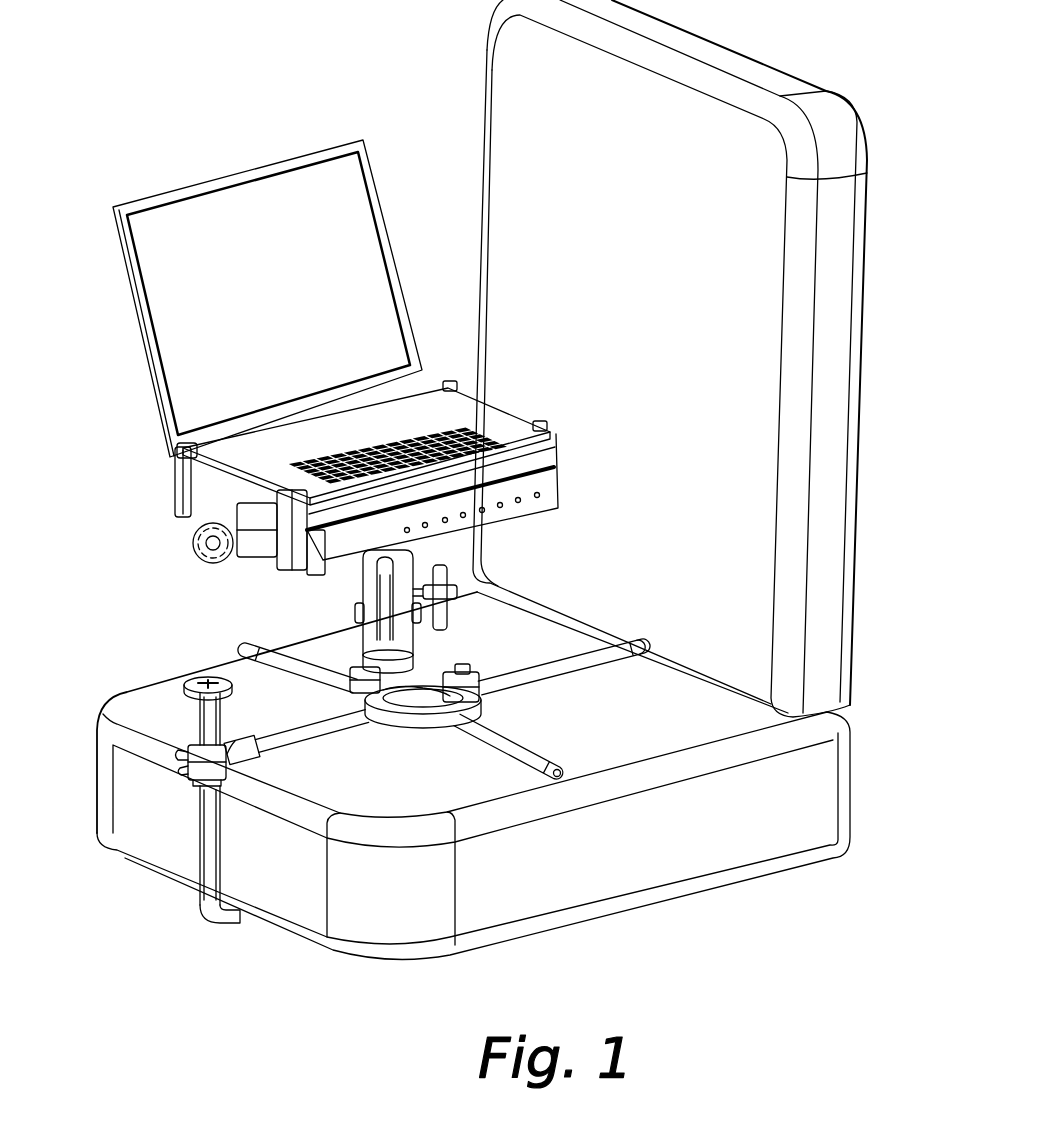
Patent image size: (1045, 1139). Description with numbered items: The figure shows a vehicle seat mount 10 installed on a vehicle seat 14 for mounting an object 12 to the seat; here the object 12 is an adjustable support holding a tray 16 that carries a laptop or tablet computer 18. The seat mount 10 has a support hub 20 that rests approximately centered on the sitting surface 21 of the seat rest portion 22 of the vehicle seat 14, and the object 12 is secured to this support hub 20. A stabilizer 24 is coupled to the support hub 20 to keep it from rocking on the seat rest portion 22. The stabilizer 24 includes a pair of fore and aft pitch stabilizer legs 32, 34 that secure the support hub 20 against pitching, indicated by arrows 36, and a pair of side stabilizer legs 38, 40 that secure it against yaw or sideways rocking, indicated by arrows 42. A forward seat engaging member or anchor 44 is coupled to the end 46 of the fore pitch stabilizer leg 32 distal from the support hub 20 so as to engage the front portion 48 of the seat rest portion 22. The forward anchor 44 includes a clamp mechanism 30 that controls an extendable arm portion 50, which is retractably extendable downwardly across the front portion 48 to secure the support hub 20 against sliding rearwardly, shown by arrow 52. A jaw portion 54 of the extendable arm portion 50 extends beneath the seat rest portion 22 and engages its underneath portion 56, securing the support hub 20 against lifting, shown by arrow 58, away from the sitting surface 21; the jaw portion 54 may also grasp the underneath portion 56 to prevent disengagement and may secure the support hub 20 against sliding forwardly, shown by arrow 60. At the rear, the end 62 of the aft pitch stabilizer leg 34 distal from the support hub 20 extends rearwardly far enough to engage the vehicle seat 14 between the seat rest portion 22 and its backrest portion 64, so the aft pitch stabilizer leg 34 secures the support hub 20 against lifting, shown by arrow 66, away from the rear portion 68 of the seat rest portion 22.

The vehicle seat mount 10 is at (127, 657).
The object 12 is at (360, 607).
The vehicle seat 14 is at (482, 140).
The tray 16 is at (548, 497).
The laptop or tablet computer 18 is at (502, 424).
The support hub 20 is at (420, 713).
The sitting surface 21 is at (468, 774).
The seat rest portion 22 is at (617, 877).
The stabilizer 24 is at (493, 747).
The clamp mechanism 30 is at (197, 743).
The fore pitch stabilizer leg 32 is at (303, 737).
The aft pitch stabilizer leg 34 is at (527, 673).
The pitching arrows 36 is at (167, 722).
The side stabilizer leg 38 is at (322, 680).
The side stabilizer leg 40 is at (507, 746).
The yaw arrows 42 is at (258, 609).
The forward seat engaging member or anchor 44 is at (213, 837).
The end of fore pitch stabilizer leg 46 is at (268, 739).
The front portion of seat rest 48 is at (313, 912).
The extendable arm portion 50 is at (213, 870).
The rearward sliding arrow 52 is at (348, 773).
The jaw portion 54 is at (223, 913).
The underneath portion of seat rest 56 is at (270, 922).
The lifting arrow 58 is at (220, 963).
The forward sliding arrow 60 is at (595, 678).
The end of aft pitch stabilizer leg 62 is at (619, 650).
The backrest portion 64 is at (858, 452).
The rear lifting arrow 66 is at (744, 789).
The rear portion of seat rest 68 is at (802, 775).